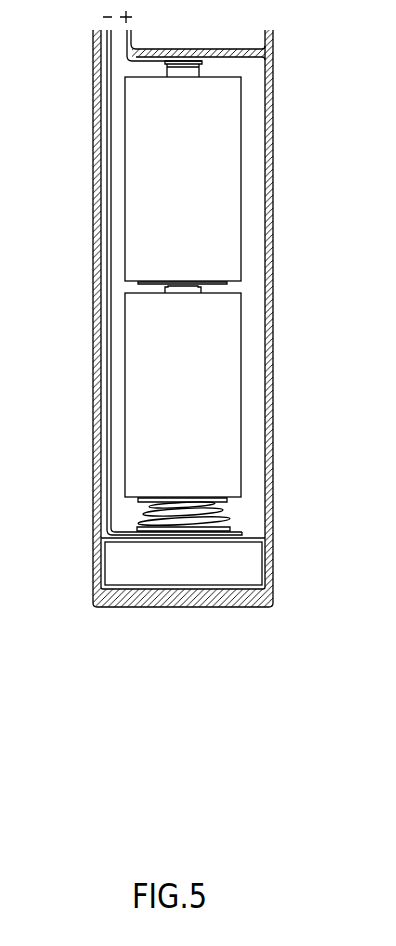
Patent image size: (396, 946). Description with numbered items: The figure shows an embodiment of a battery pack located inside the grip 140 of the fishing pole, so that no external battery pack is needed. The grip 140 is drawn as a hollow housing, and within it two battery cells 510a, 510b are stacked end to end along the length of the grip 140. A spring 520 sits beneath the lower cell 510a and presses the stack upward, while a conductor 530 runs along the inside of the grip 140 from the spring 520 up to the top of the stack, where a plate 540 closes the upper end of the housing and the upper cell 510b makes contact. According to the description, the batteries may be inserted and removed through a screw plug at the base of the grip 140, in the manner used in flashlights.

The grip 140 is at (97, 318).
The lower battery cell 510a is at (223, 397).
The upper battery cell 510b is at (223, 181).
The spring contact 520 is at (222, 517).
The electrical conductor / terminal 530 is at (110, 92).
The top cover plate 540 is at (127, 37).